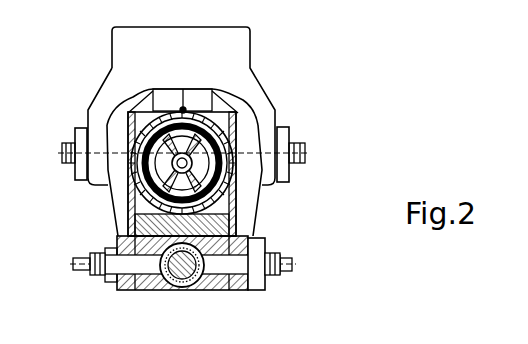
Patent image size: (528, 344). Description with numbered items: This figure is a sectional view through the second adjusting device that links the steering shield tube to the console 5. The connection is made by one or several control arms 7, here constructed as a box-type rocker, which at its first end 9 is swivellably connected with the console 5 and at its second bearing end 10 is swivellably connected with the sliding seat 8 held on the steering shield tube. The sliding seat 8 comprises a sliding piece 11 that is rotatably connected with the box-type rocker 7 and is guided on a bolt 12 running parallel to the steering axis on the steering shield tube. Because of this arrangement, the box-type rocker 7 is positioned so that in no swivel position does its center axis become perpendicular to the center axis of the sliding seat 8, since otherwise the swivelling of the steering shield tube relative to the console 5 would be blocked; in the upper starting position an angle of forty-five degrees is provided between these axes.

The console 5 is at (258, 94).
The control arm 7 is at (254, 219).
The sliding seat 8 is at (190, 298).
The first end 9 is at (250, 140).
The second bearing end 10 is at (266, 240).
The sliding piece 11 is at (126, 290).
The bolt 12 is at (204, 291).